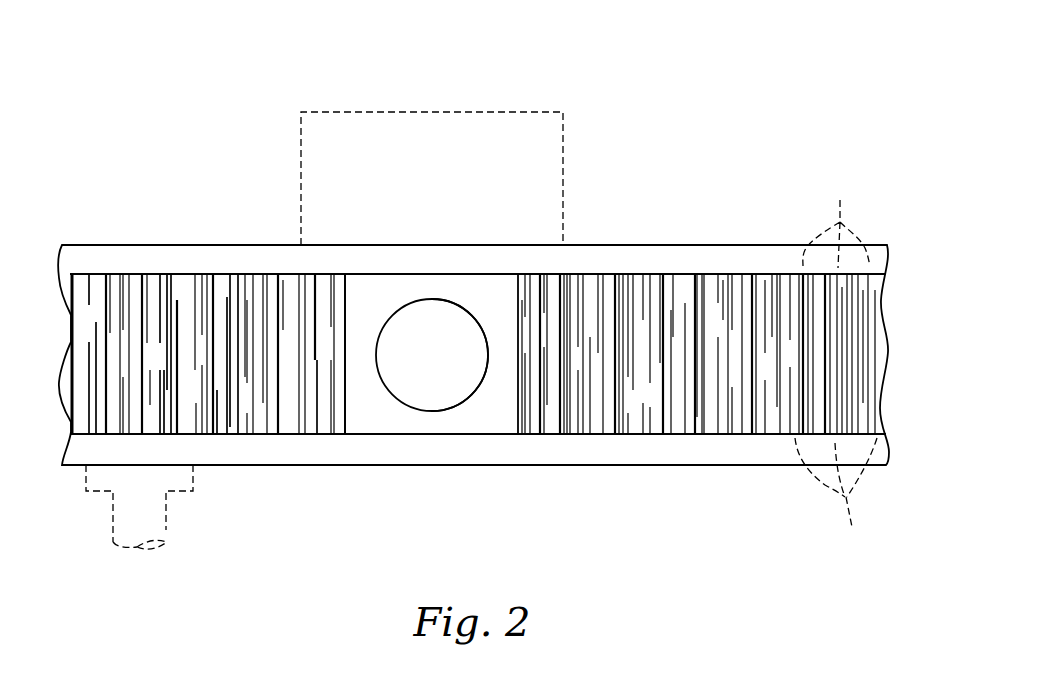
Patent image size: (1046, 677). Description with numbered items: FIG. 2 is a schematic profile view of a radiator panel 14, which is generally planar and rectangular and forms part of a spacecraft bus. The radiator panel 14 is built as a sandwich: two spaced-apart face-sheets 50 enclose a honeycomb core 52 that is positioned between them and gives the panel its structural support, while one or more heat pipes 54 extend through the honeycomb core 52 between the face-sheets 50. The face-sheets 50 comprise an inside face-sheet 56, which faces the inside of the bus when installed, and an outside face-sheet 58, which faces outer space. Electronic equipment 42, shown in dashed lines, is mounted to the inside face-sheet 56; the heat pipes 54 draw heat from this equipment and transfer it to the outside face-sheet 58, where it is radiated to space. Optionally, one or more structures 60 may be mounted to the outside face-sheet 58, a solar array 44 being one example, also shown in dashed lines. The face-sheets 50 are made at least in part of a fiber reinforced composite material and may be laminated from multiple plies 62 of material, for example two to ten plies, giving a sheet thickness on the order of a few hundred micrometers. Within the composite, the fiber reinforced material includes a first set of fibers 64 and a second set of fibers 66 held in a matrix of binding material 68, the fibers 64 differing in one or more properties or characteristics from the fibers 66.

The radiator panel 14 is at (775, 136).
The electronic equipment 42 is at (538, 112).
The solar array 44 is at (167, 530).
The face-sheet 50 is at (718, 246).
The honeycomb core 52 is at (612, 410).
The heat pipe 54 is at (518, 405).
The inside face-sheet 56 is at (637, 245).
The outside face-sheet 58 is at (662, 465).
The structure 60 is at (114, 519).
The ply 62 is at (836, 363).
The fibers 64 is at (104, 263).
The fibers 66 is at (167, 262).
The binding material 68 is at (227, 262).